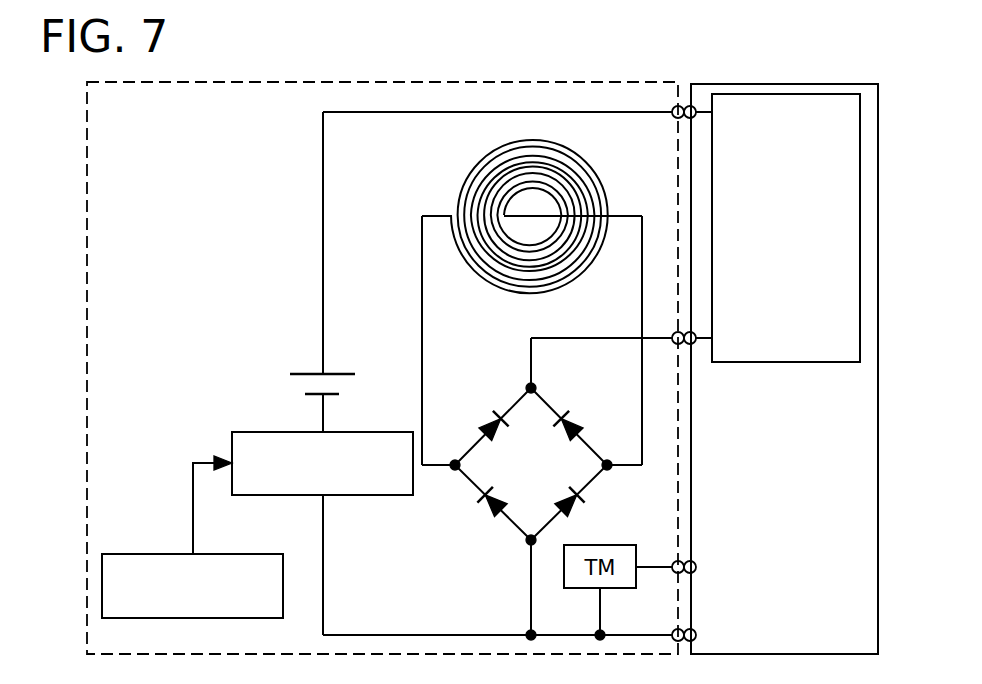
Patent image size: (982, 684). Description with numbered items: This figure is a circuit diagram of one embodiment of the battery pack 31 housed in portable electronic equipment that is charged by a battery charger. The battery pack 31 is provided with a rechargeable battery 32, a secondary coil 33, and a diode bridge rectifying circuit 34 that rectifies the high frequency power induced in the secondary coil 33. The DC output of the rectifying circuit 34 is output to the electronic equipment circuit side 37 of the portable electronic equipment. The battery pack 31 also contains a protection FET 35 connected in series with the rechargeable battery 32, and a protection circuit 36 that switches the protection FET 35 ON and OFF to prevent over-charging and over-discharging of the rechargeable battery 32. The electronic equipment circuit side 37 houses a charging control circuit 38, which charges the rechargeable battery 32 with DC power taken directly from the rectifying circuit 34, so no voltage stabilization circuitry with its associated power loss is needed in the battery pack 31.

The battery pack 31 is at (87, 448).
The rechargeable battery 32 is at (298, 374).
The secondary coil 33 is at (475, 155).
The diode bridge rectifying circuit 34 is at (485, 540).
The protection FET 35 is at (250, 432).
The protection circuit 36 is at (195, 618).
The electronic equipment circuit side 37 is at (878, 455).
The charging control circuit 38 is at (745, 362).